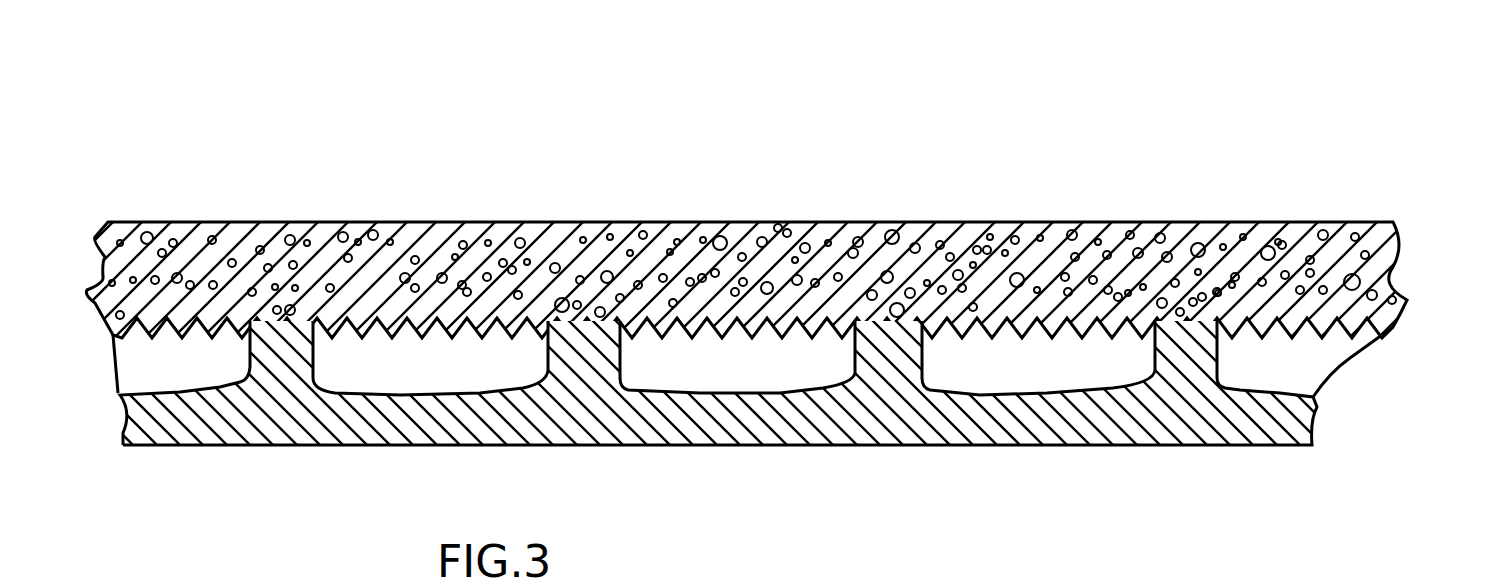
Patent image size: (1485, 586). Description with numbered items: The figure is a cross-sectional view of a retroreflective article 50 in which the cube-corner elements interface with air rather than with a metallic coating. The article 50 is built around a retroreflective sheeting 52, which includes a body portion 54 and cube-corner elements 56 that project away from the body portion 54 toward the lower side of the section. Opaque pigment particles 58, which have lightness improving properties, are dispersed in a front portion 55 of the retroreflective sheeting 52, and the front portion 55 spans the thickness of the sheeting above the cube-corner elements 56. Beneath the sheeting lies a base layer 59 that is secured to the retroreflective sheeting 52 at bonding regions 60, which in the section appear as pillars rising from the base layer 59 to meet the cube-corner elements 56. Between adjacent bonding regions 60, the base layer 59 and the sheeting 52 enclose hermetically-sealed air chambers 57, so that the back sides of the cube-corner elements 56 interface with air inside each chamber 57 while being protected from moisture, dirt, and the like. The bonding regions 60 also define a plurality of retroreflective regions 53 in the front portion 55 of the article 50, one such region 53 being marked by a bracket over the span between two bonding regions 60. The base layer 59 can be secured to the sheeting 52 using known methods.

The retroreflective article 50 is at (788, 108).
The retroreflective sheeting 52 is at (742, 256).
The retroreflective regions 53 is at (548, 193).
The body portion 54 is at (190, 228).
The front portion 55 is at (1405, 338).
The cube-corner elements 56 is at (753, 318).
The hermetically-sealed air chambers 57 is at (190, 376).
The opaque pigment particles 58 is at (1100, 222).
The base layer 59 is at (1228, 430).
The bonding regions 60 is at (316, 348).